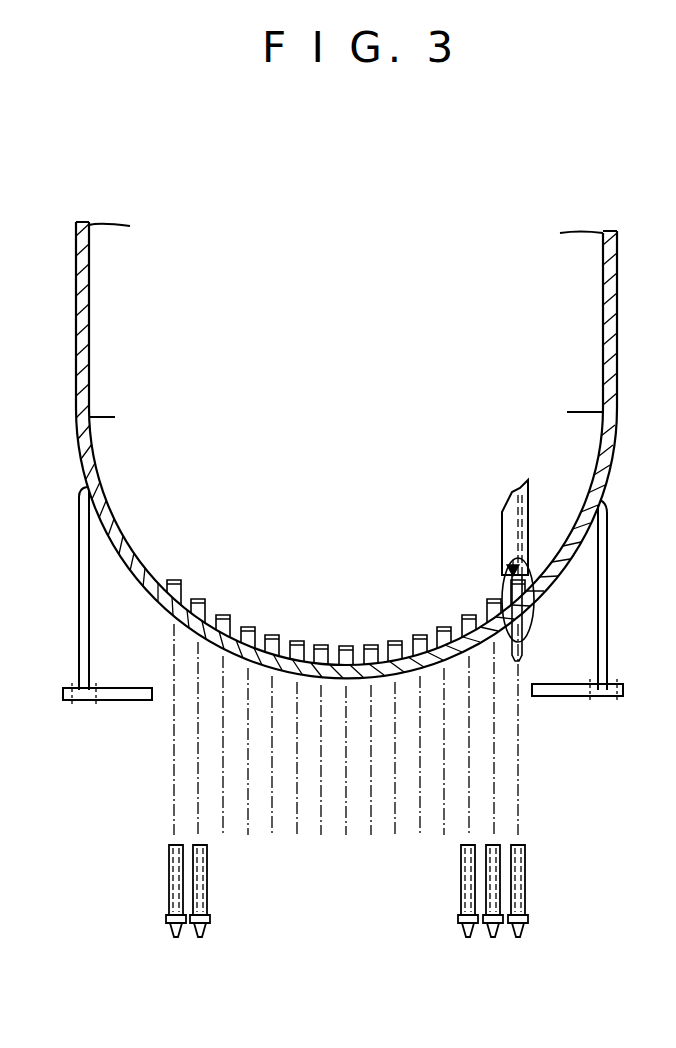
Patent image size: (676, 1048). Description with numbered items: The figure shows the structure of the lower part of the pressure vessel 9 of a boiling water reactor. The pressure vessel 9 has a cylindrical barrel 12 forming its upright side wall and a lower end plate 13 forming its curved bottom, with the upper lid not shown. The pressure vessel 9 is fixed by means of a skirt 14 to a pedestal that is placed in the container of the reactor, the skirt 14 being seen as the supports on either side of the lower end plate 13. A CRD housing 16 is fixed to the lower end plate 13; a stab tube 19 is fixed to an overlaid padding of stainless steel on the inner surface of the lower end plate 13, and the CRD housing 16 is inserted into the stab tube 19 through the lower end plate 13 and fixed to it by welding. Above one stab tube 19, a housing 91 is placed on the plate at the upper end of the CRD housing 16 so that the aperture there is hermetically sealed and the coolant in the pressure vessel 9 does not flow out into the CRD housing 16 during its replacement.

The pressure vessel 9 is at (78, 362).
The cylindrical barrel 12 is at (90, 270).
The lower end plate 13 is at (94, 456).
The skirt 14 is at (607, 558).
The CRD housing 16 is at (522, 878).
The stab tube 19 is at (510, 580).
The housing 91 is at (528, 508).